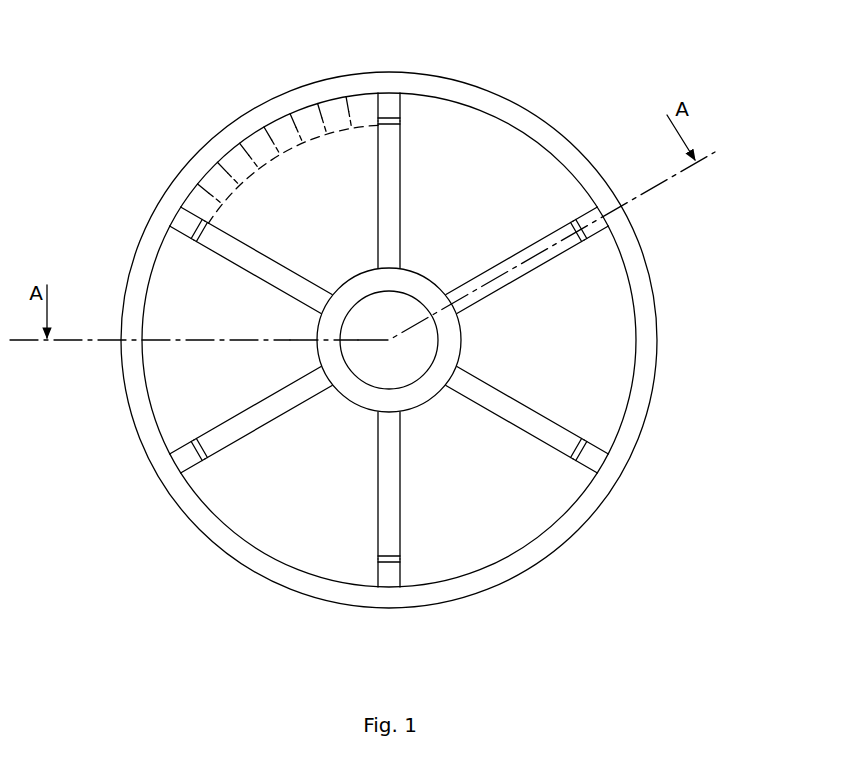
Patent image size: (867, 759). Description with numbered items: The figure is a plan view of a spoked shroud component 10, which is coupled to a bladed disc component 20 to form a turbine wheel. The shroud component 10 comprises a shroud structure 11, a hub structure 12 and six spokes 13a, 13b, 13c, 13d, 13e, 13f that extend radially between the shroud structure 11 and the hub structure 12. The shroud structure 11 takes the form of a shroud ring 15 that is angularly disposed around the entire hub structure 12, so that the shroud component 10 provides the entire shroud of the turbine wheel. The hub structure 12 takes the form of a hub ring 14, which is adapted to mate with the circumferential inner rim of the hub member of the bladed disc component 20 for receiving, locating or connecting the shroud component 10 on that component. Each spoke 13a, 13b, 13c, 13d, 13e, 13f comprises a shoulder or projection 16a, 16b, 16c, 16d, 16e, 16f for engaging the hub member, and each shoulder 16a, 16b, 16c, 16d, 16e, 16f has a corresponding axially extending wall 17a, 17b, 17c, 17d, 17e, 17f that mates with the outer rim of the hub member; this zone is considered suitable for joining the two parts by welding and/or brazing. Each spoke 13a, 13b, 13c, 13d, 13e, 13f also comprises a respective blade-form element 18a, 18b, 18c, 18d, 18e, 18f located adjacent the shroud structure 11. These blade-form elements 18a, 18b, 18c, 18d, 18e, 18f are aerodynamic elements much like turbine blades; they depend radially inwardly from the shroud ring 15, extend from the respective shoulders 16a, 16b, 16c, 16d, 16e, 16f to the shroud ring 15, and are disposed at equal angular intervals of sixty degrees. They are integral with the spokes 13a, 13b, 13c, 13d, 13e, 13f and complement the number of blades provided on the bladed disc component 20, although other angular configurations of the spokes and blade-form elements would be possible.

The shroud component 10 is at (158, 113).
The shroud structure 11 is at (662, 348).
The hub structure 12 is at (340, 407).
The spoke 13a is at (517, 404).
The spoke 13b is at (480, 252).
The spoke 13c is at (377, 208).
The spoke 13d is at (235, 290).
The spoke 13e is at (250, 436).
The spoke 13f is at (405, 494).
The hub ring 14 is at (423, 287).
The shroud ring 15 is at (530, 567).
The shoulder 16a is at (562, 462).
The shoulder 16b is at (575, 257).
The shoulder 16c is at (401, 119).
The shoulder 16d is at (205, 241).
The shoulder 16e is at (193, 437).
The shoulder 16f is at (378, 556).
The axially extending wall 17a is at (567, 432).
The axially extending wall 17b is at (574, 228).
The axially extending wall 17c is at (390, 128).
The axially extending wall 17d is at (240, 240).
The axially extending wall 17e is at (208, 452).
The axially extending wall 17f is at (395, 549).
The blade-form element 18a is at (597, 456).
The blade-form element 18b is at (625, 222).
The blade-form element 18c is at (387, 105).
The blade-form element 18d is at (185, 220).
The blade-form element 18e is at (185, 462).
The blade-form element 18f is at (390, 574).
The bladed disc component 20 is at (275, 136).